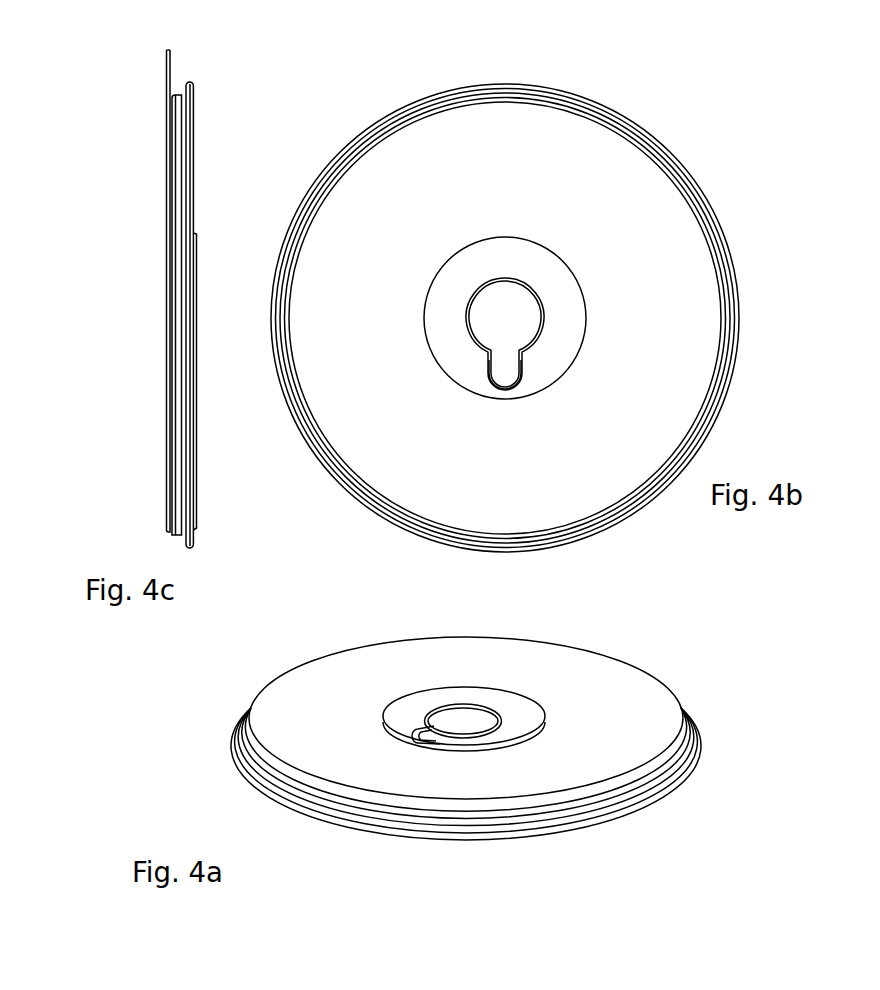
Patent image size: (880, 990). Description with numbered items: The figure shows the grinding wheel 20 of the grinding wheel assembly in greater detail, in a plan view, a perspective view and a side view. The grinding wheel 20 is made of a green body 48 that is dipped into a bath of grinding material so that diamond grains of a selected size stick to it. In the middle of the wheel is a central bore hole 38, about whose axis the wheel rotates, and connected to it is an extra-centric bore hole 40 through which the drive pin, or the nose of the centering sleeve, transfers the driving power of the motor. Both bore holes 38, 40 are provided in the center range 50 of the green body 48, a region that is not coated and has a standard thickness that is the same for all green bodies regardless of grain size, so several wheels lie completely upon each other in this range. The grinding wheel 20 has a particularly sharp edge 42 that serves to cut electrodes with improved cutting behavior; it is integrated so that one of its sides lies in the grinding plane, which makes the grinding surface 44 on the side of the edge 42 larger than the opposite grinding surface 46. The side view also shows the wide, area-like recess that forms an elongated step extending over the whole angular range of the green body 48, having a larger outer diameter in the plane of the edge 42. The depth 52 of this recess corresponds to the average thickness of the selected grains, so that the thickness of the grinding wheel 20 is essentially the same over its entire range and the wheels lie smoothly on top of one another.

In FIG. 4B, the grinding wheel 20 is at (658, 95).
In FIG. 4C, the grinding wheel 20 is at (142, 135).
In FIG. 4A, the grinding wheel 20 is at (642, 625).
In FIG. 4B, the central bore hole 38 is at (504, 312).
In FIG. 4A, the central bore hole 38 is at (478, 725).
In FIG. 4B, the extra-centric bore hole 40 is at (504, 372).
In FIG. 4A, the extra-centric bore hole 40 is at (432, 727).
In FIG. 4B, the sharp edge 42 is at (733, 304).
In FIG. 4C, the sharp edge 42 is at (192, 85).
In FIG. 4A, the sharp edge 42 is at (683, 763).
In FIG. 4B, the grinding surface 44 is at (593, 6).
In FIG. 4C, the grinding surface 44 is at (218, 132).
In FIG. 4A, the grinding surface 44 is at (597, 847).
In FIG. 4C, the opposite grinding surface 46 is at (166, 218).
In FIG. 4A, the opposite grinding surface 46 is at (635, 730).
In FIG. 4C, the green body 48 is at (178, 190).
In FIG. 4B, the center range 50 is at (555, 300).
In FIG. 4C, the center range 50 is at (166, 292).
In FIG. 4A, the center range 50 is at (490, 697).
In FIG. 4C, the depth of the recess 52 is at (112, 50).